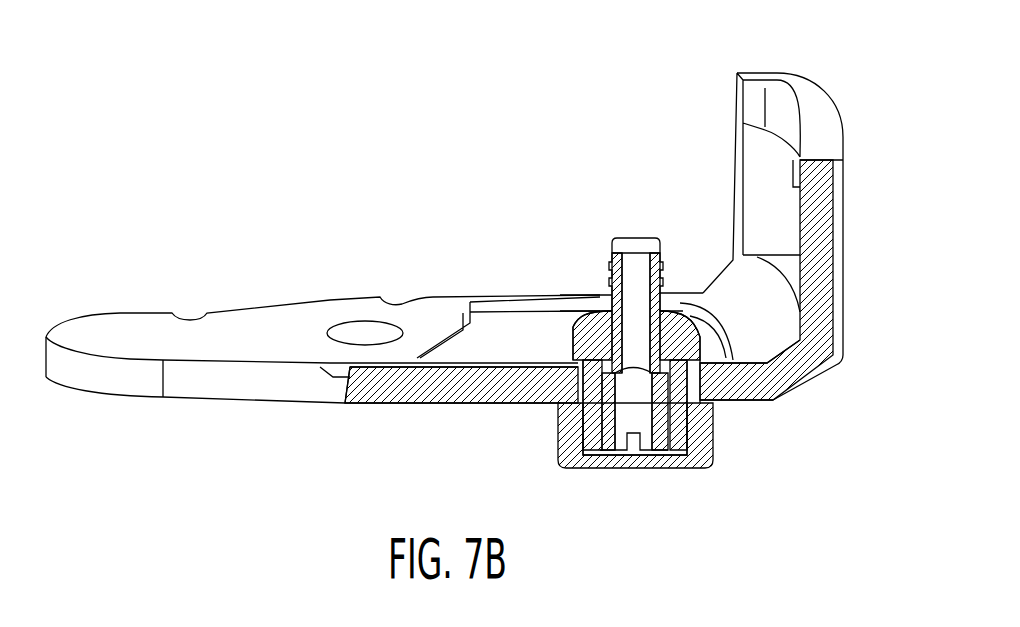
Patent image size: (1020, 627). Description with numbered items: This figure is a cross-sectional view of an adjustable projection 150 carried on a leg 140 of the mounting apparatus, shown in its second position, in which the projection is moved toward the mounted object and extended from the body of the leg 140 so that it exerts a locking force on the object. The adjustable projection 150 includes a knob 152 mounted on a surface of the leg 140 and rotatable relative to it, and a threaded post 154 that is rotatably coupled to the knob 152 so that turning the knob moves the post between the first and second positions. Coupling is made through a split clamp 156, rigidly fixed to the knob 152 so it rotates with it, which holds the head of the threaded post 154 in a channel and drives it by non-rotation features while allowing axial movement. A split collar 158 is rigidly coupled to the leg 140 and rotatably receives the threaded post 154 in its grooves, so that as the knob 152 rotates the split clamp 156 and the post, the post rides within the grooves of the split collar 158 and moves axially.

The leg 140 is at (368, 313).
The adjustable projection 150 is at (621, 219).
The knob 152 is at (719, 445).
The threaded post 154 is at (618, 258).
The split clamp 156 is at (713, 412).
The split collar 158 is at (612, 292).